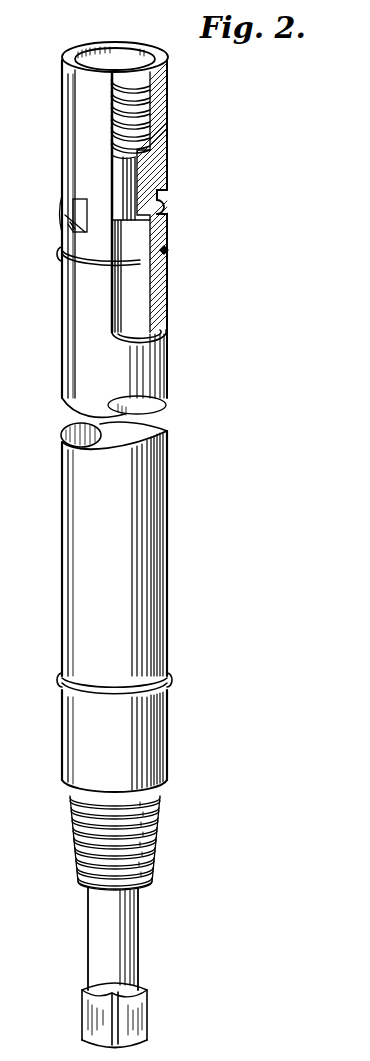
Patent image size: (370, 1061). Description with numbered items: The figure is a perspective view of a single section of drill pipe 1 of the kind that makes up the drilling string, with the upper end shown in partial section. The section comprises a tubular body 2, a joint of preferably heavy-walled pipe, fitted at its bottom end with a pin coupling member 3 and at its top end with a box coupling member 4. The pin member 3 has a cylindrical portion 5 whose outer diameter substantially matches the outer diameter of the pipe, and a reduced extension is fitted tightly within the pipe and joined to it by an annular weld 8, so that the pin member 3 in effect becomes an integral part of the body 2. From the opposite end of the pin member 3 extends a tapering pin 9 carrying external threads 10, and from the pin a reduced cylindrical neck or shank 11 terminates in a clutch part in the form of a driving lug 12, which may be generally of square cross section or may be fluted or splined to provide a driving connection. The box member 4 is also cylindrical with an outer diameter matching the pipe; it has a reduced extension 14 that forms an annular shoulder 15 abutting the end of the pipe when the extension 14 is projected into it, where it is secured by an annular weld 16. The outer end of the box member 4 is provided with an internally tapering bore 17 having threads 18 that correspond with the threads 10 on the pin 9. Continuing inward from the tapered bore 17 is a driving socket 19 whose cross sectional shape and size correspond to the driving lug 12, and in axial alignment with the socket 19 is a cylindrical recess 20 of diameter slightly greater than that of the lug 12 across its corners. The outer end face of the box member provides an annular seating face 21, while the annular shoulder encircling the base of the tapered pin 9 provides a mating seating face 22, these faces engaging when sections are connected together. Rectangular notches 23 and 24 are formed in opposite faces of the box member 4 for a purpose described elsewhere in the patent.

The section of drill pipe 1 is at (178, 436).
The tubular body 2 is at (90, 548).
The pin coupling member 3 is at (168, 735).
The box coupling member 4 is at (167, 143).
The cylindrical portion 5 is at (80, 728).
The annular weld 8 is at (168, 684).
The tapering pin 9 is at (152, 828).
The external threads 10 is at (143, 856).
The reduced cylindrical neck or shank 11 is at (138, 930).
The driving lug 12 is at (136, 1000).
The reduced extension 14 is at (140, 260).
The annular shoulder 15 is at (176, 243).
The annular weld 16 is at (170, 250).
The internally tapering bore 17 is at (150, 98).
The threads 18 is at (143, 112).
The driving socket 19 is at (130, 178).
The cylindrical recess 20 is at (137, 270).
The annular seating face 21 is at (68, 788).
The seating face 22 is at (74, 50).
The rectangular notch 23 is at (72, 207).
The rectangular notch 24 is at (160, 201).